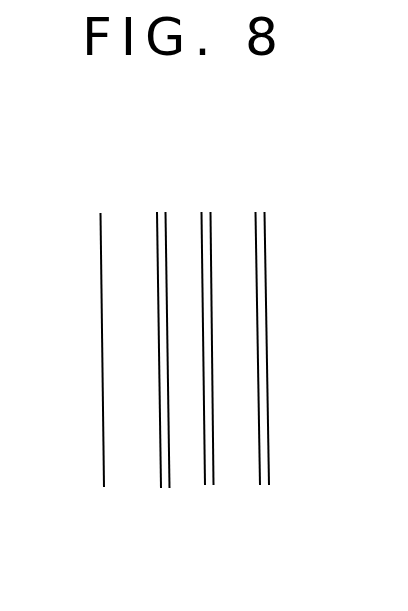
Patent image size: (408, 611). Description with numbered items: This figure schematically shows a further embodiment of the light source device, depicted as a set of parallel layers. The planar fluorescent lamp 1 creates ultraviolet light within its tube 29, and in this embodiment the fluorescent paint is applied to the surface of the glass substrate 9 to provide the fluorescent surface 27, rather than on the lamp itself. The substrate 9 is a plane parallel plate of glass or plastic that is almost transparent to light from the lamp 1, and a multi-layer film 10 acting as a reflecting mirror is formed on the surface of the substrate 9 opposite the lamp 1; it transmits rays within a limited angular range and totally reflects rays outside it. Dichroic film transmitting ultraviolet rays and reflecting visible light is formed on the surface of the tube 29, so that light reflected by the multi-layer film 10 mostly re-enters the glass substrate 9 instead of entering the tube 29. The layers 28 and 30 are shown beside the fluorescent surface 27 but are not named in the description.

The planar fluorescent lamp 1 is at (115, 203).
The plane parallel substrate 9 is at (233, 215).
The multi-layer film 10 is at (260, 210).
The fluorescent surface 27 is at (212, 485).
The left electrode layer pair 28 is at (163, 208).
The fluorescent tube 29 is at (123, 487).
The middle layer 30 is at (188, 483).